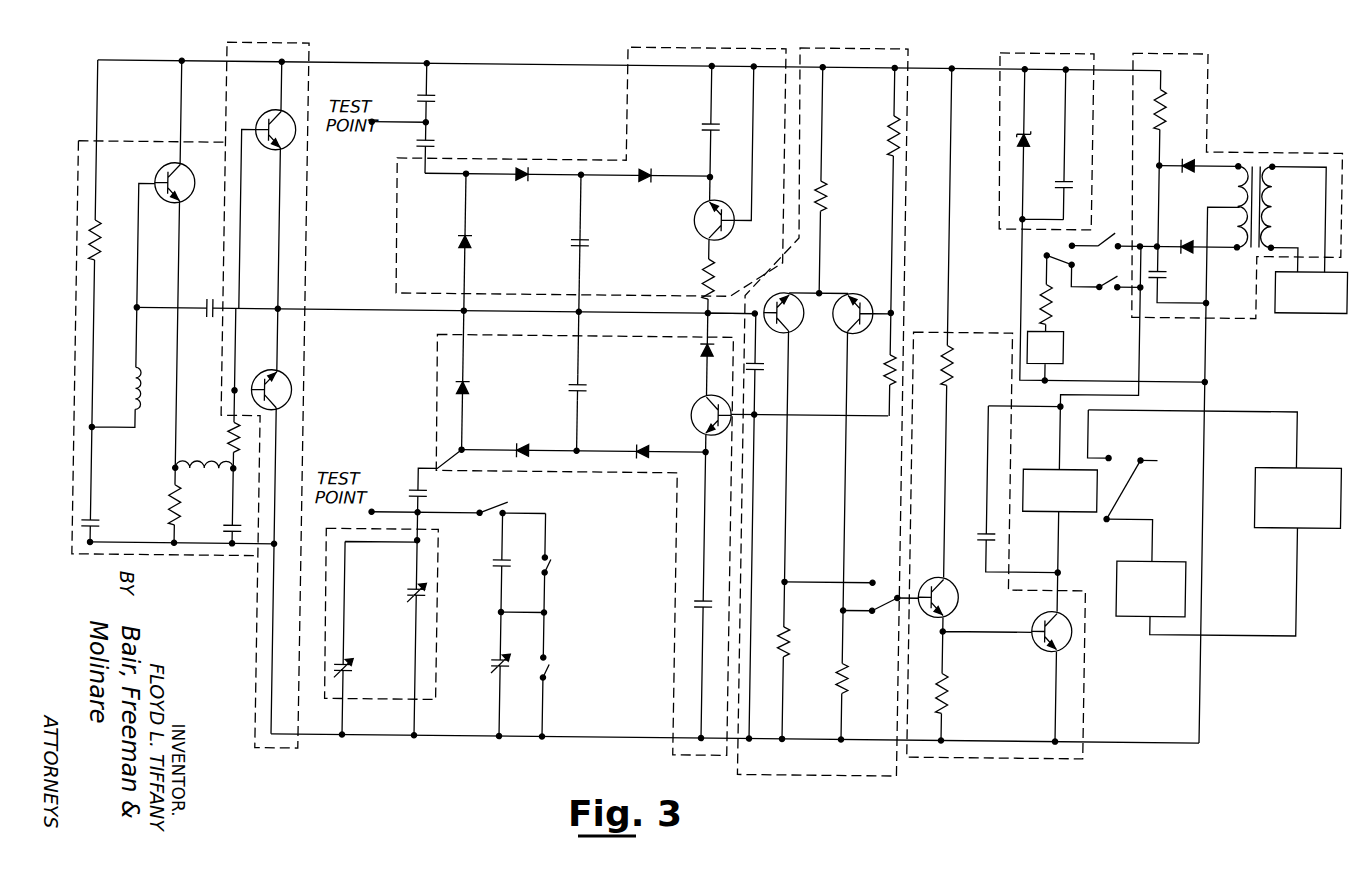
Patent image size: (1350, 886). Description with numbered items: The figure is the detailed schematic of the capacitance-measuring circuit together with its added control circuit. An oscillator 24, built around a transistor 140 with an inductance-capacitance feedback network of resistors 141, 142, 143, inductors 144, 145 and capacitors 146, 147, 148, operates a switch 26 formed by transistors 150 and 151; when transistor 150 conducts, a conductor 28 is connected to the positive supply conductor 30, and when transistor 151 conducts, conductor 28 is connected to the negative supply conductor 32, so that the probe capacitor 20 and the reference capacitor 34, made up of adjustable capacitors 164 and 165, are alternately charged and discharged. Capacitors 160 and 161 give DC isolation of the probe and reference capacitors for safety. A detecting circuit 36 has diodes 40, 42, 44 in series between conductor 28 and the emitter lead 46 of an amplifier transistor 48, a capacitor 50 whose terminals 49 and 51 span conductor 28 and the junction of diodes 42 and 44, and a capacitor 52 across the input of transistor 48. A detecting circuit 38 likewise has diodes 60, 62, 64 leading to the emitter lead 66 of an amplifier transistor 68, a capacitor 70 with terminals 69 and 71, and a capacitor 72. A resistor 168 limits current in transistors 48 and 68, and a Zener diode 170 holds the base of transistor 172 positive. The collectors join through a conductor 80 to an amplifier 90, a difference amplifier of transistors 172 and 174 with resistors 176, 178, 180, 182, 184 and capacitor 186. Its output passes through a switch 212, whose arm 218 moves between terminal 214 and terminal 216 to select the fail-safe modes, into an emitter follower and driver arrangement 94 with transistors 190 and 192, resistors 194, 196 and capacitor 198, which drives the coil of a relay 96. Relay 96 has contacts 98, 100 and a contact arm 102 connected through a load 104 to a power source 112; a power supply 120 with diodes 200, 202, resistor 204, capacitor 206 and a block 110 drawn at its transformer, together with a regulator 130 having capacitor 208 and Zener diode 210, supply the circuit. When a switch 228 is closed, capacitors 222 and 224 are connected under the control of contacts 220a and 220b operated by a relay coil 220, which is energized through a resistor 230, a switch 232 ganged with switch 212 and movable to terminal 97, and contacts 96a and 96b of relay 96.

The probe capacitor 20 is at (436, 103).
The oscillator 24 is at (151, 144).
The switch 26 is at (296, 44).
The conductor 28 is at (548, 316).
The positive supply conductor 30 is at (521, 64).
The negative supply conductor 32 is at (566, 739).
The reference capacitor 34 is at (444, 688).
The detecting circuit 36 is at (395, 224).
The detecting circuit 38 is at (436, 424).
The diode 40 is at (471, 243).
The diode 42 is at (524, 182).
The diode 44 is at (646, 182).
The emitter lead 46 is at (713, 184).
The amplifier transistor 48 is at (696, 232).
The terminal 49 is at (582, 288).
The capacitor 50 is at (587, 248).
The terminal 51 is at (581, 204).
The capacitor 52 is at (702, 128).
The diode 60 is at (472, 389).
The diode 62 is at (527, 448).
The diode 64 is at (645, 449).
The emitter lead 66 is at (707, 450).
The amplifier transistor 68 is at (692, 406).
The terminal 69 is at (582, 355).
The capacitor 70 is at (588, 389).
The terminal 71 is at (582, 422).
The capacitor 72 is at (696, 603).
The conductor 80 is at (705, 314).
The amplifier 90 is at (877, 777).
The emitter follower and driver arrangement 94 is at (1065, 760).
The relay 96 is at (1032, 465).
The relay contact 96a is at (1105, 231).
The relay contact 96b is at (1109, 284).
The terminal 97 is at (1070, 241).
The contact 98 is at (1111, 452).
The contact 100 is at (1146, 455).
The contact arm 102 is at (1126, 490).
The load 104 is at (1136, 619).
The power source 110 is at (1311, 293).
The power source 112 is at (1297, 498).
The power supply 120 is at (1206, 108).
The regulator 130 is at (1054, 49).
The transistor 140 is at (160, 178).
The resistor 141 is at (97, 228).
The resistor 142 is at (172, 513).
The resistor 143 is at (230, 434).
The inductor 144 is at (208, 476).
The inductor 145 is at (137, 372).
The capacitor 146 is at (95, 520).
The capacitor 147 is at (227, 531).
The capacitor 148 is at (205, 319).
The transistor 150 is at (266, 116).
The transistor 151 is at (264, 375).
The capacitor 160 is at (437, 147).
The capacitor 161 is at (430, 495).
The adjustable capacitor 164 is at (409, 594).
The adjustable capacitor 165 is at (357, 672).
The resistor 168 is at (716, 272).
The Zener diode 170 is at (702, 358).
The transistor 172 is at (790, 331).
The transistor 174 is at (856, 290).
The resistor 176 is at (825, 194).
The resistor 178 is at (888, 133).
The resistor 180 is at (787, 659).
The resistor 182 is at (888, 382).
The resistor 184 is at (837, 669).
The capacitor 186 is at (763, 369).
The transistor 190 is at (957, 599).
The transistor 192 is at (1040, 642).
The resistor 194 is at (953, 362).
The resistor 196 is at (954, 698).
The capacitor 198 is at (977, 535).
The diode 200 is at (1188, 161).
The diode 202 is at (1187, 234).
The resistor 204 is at (1163, 98).
The capacitor 206 is at (1164, 270).
The capacitor 208 is at (1058, 185).
The Zener diode 210 is at (1025, 134).
The switch 212 is at (881, 566).
The terminal 214 is at (873, 578).
The terminal 216 is at (876, 612).
The arm 218 is at (900, 594).
The relay coil 220 is at (1064, 351).
The contact 220a is at (553, 566).
The contact 220b is at (555, 672).
The capacitor 222 is at (496, 564).
The capacitor 224 is at (497, 666).
The switch 228 is at (511, 504).
The resistor 230 is at (1042, 300).
The switch 232 is at (1072, 262).